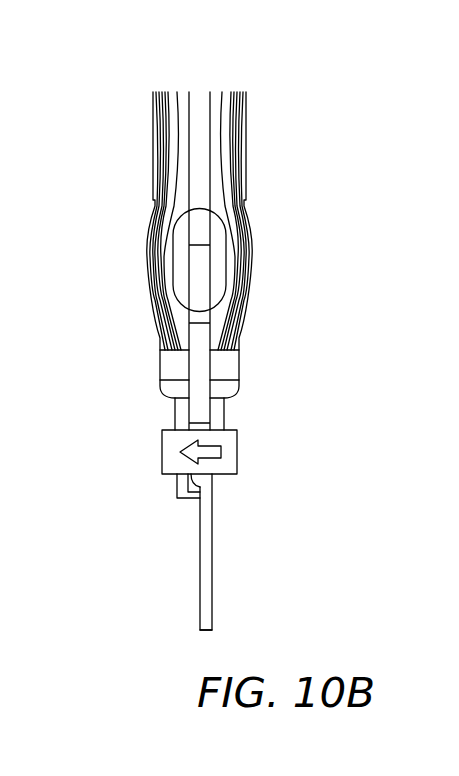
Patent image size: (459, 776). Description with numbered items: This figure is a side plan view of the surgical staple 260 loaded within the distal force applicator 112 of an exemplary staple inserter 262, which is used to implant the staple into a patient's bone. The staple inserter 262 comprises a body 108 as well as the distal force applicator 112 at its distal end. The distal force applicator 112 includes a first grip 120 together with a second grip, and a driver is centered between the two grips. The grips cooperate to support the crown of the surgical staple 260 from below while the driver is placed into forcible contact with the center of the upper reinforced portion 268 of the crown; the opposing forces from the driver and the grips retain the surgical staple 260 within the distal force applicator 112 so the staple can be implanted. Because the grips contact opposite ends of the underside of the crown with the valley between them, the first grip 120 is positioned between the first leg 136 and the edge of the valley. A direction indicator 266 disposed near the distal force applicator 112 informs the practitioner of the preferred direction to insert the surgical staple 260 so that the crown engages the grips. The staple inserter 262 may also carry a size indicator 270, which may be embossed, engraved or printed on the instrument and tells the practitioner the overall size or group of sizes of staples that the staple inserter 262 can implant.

The staple inserter 262 is at (218, 63).
The size indicator 270 is at (153, 144).
The body 108 is at (252, 258).
The distal force applicator 112 is at (253, 446).
The direction indicator 266 is at (162, 446).
The first grip 120 is at (177, 489).
The upper reinforced portion 268 is at (214, 478).
The first leg 136 is at (212, 590).
The surgical staple 260 is at (186, 608).